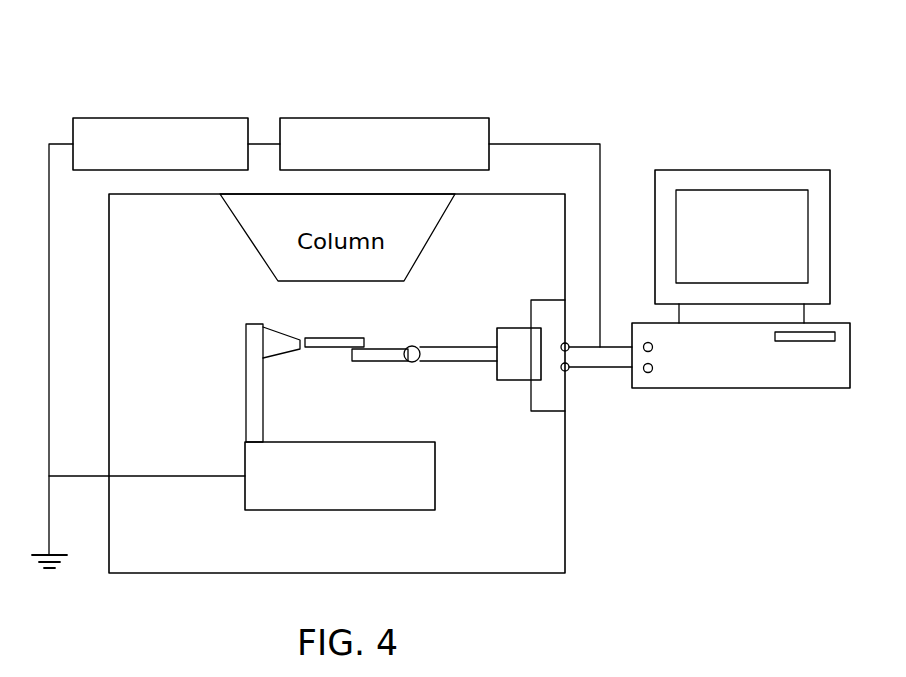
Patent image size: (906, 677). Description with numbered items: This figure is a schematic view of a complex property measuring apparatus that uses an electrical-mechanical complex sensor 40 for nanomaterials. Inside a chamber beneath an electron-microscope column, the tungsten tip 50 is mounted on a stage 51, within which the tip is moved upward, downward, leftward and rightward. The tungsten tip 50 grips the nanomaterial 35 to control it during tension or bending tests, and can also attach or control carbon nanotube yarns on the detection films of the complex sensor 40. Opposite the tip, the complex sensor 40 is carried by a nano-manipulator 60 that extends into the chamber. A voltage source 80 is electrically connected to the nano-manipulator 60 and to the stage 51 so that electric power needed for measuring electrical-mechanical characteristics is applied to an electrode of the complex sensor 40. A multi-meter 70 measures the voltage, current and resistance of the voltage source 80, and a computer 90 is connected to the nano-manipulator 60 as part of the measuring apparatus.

The nano material 35 is at (397, 302).
The complex sensor 40 is at (424, 398).
The tungsten tip 50 is at (225, 348).
The stage 51 is at (394, 488).
The nano-manipulator 60 is at (500, 305).
The multi-meter 70 is at (160, 89).
The voltage source 80 is at (384, 85).
The computer 90 is at (741, 220).